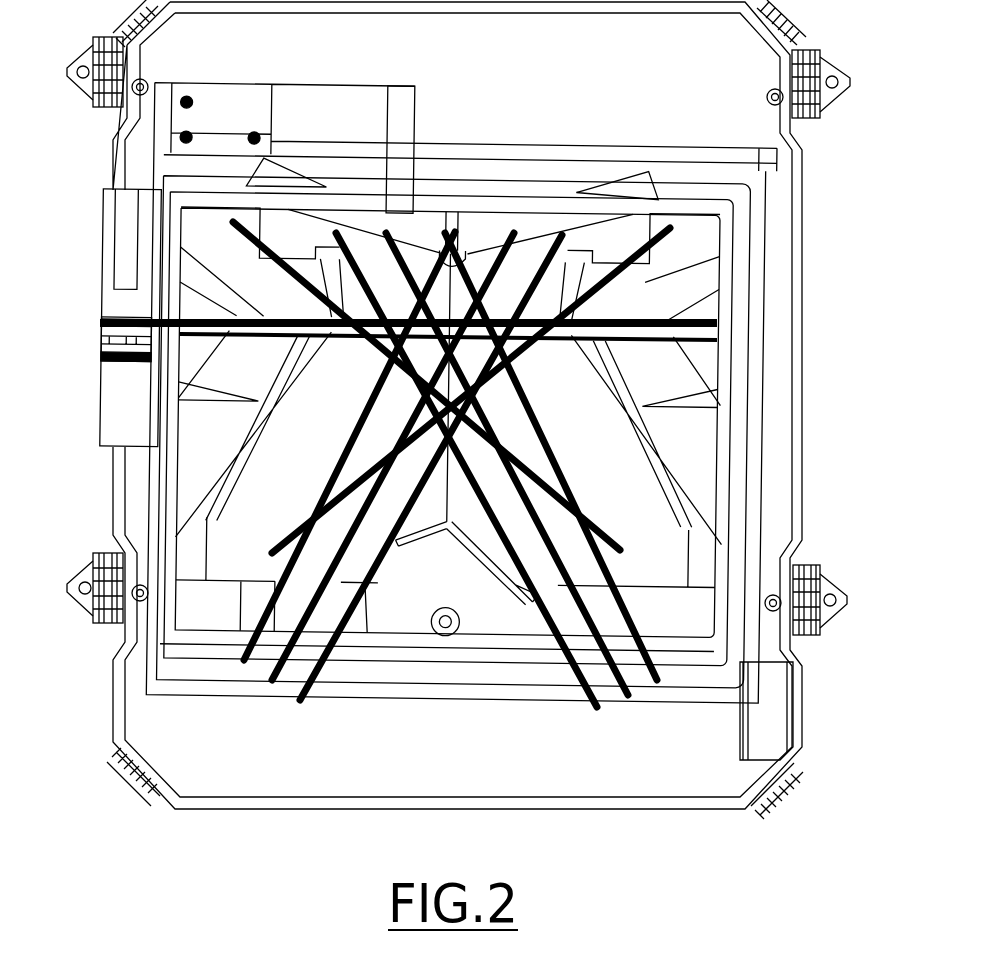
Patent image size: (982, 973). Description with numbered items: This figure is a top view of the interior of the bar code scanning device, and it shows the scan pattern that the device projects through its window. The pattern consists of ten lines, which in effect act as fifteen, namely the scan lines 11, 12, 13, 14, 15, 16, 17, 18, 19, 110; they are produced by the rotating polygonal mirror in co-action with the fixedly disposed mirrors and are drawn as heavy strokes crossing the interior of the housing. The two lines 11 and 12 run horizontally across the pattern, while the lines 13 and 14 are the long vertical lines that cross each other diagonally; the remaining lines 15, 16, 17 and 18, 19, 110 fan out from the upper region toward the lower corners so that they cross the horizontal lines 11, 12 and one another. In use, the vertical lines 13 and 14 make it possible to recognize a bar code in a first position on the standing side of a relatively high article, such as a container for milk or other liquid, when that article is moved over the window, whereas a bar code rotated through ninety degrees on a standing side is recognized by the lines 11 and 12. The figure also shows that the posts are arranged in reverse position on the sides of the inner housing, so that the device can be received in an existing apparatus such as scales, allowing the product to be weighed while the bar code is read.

The scan line 11 is at (717, 327).
The scan line 12 is at (717, 340).
The vertical scan line 13 is at (626, 547).
The vertical scan line 14 is at (675, 235).
The scan line 15 is at (303, 703).
The scan line 16 is at (277, 690).
The scan line 17 is at (244, 664).
The scan line 18 is at (597, 708).
The scan line 19 is at (629, 698).
The scan line 110 is at (658, 684).